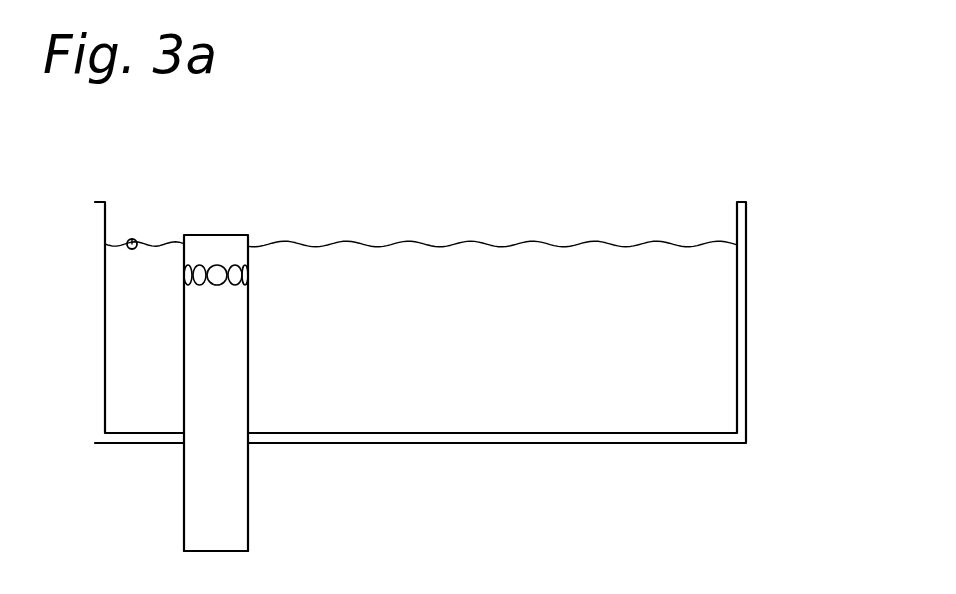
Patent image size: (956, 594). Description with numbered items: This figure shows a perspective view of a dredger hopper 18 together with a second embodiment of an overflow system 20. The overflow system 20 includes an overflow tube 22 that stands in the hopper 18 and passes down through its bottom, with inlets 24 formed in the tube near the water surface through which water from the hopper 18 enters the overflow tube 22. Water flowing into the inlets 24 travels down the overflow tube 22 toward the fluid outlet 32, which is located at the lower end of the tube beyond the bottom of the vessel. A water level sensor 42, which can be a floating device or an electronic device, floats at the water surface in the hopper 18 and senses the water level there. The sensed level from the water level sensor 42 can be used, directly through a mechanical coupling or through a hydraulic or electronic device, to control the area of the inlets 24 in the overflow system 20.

The hopper 18 is at (542, 222).
The overflow system 20 is at (237, 226).
The overflow tube 22 is at (230, 459).
The inlets 24 is at (233, 275).
The fluid outlet 32 is at (234, 560).
The water level sensor 42 is at (132, 239).